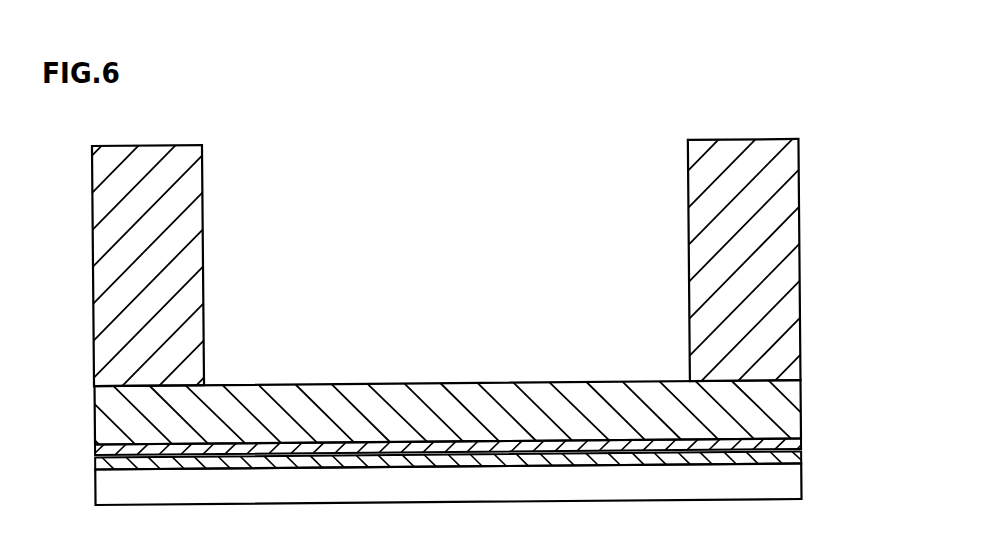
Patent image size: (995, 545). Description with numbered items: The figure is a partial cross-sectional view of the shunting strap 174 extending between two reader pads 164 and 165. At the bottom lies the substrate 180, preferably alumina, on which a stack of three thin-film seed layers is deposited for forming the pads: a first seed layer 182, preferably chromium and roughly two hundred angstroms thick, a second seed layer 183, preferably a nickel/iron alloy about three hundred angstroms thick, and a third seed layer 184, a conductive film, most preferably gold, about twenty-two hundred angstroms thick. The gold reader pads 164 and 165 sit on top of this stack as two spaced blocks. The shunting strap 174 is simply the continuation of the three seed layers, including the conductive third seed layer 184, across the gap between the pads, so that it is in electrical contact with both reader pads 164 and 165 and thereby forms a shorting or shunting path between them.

The reader pad 164 is at (185, 162).
The reader pad 165 is at (698, 152).
The shunting strap 174 is at (433, 333).
The third seed layer 184 is at (795, 392).
The second seed layer 183 is at (800, 438).
The first seed layer 182 is at (800, 453).
The substrate 180 is at (798, 470).